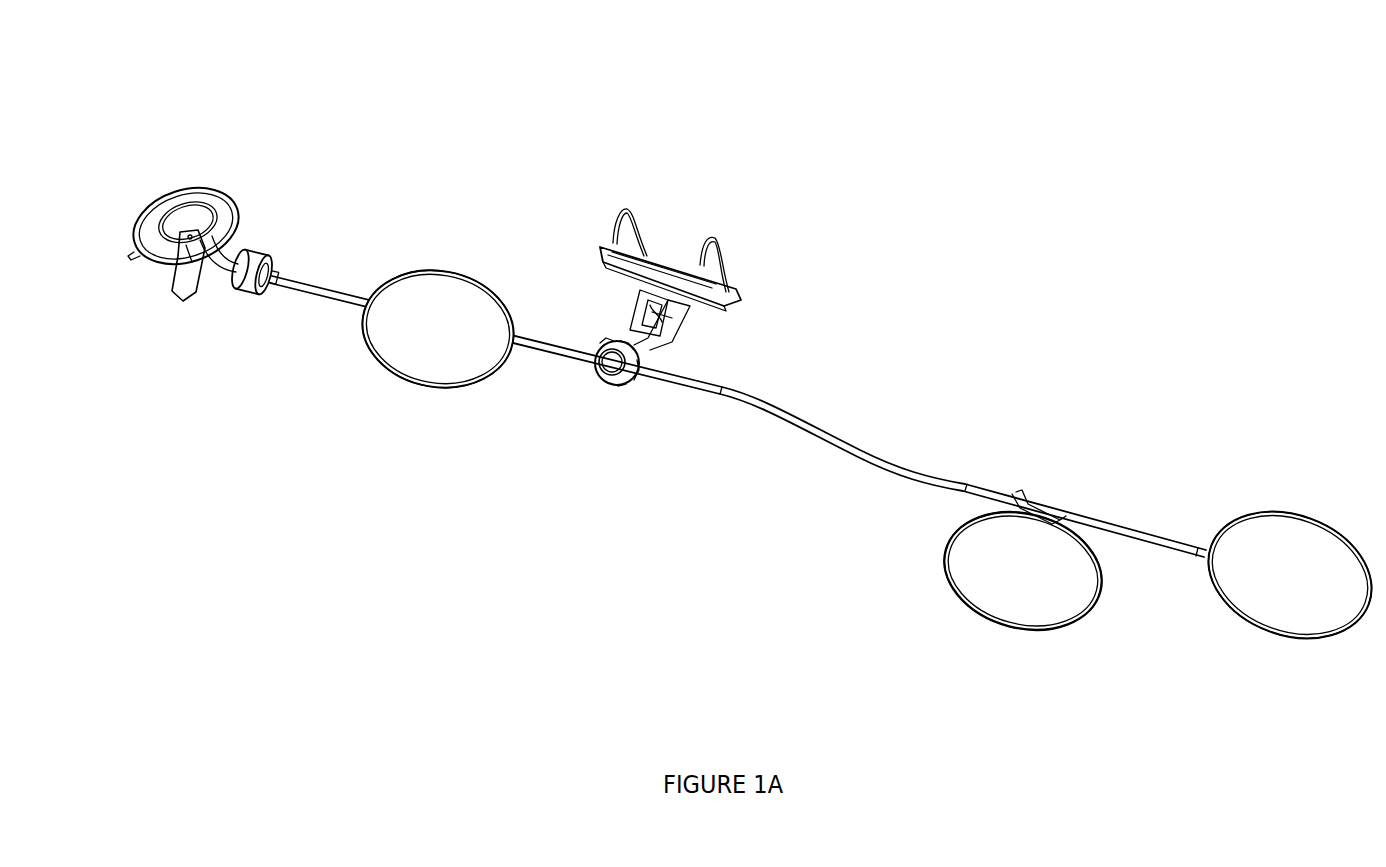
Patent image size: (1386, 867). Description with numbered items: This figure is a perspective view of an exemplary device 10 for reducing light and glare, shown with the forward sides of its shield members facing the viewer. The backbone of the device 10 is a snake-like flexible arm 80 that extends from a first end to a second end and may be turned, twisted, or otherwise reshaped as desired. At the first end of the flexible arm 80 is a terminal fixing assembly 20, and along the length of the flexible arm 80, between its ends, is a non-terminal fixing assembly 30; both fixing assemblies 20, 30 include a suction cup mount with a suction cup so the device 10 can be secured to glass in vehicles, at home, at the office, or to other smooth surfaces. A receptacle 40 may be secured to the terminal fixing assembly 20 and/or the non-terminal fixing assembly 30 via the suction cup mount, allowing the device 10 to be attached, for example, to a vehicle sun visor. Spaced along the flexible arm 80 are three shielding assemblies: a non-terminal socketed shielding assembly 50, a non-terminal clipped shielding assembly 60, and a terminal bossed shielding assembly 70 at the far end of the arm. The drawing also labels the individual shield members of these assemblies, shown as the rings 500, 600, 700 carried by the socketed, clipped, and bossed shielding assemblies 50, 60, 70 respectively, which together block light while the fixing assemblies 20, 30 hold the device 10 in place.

The device for reducing glare 10 is at (966, 122).
The terminal fixing assembly 20 is at (228, 152).
The non-terminal fixing assembly 30 is at (703, 352).
The receptacle 40 is at (757, 272).
The socketed shielding assembly 50 is at (475, 233).
The clipped shielding assembly 60 is at (1054, 446).
The bossed shielding assembly 70 is at (1318, 488).
The flexible arm 80 is at (790, 423).
The first ring 500 is at (415, 386).
The second ring 600 is at (1000, 627).
The third ring 700 is at (1276, 637).